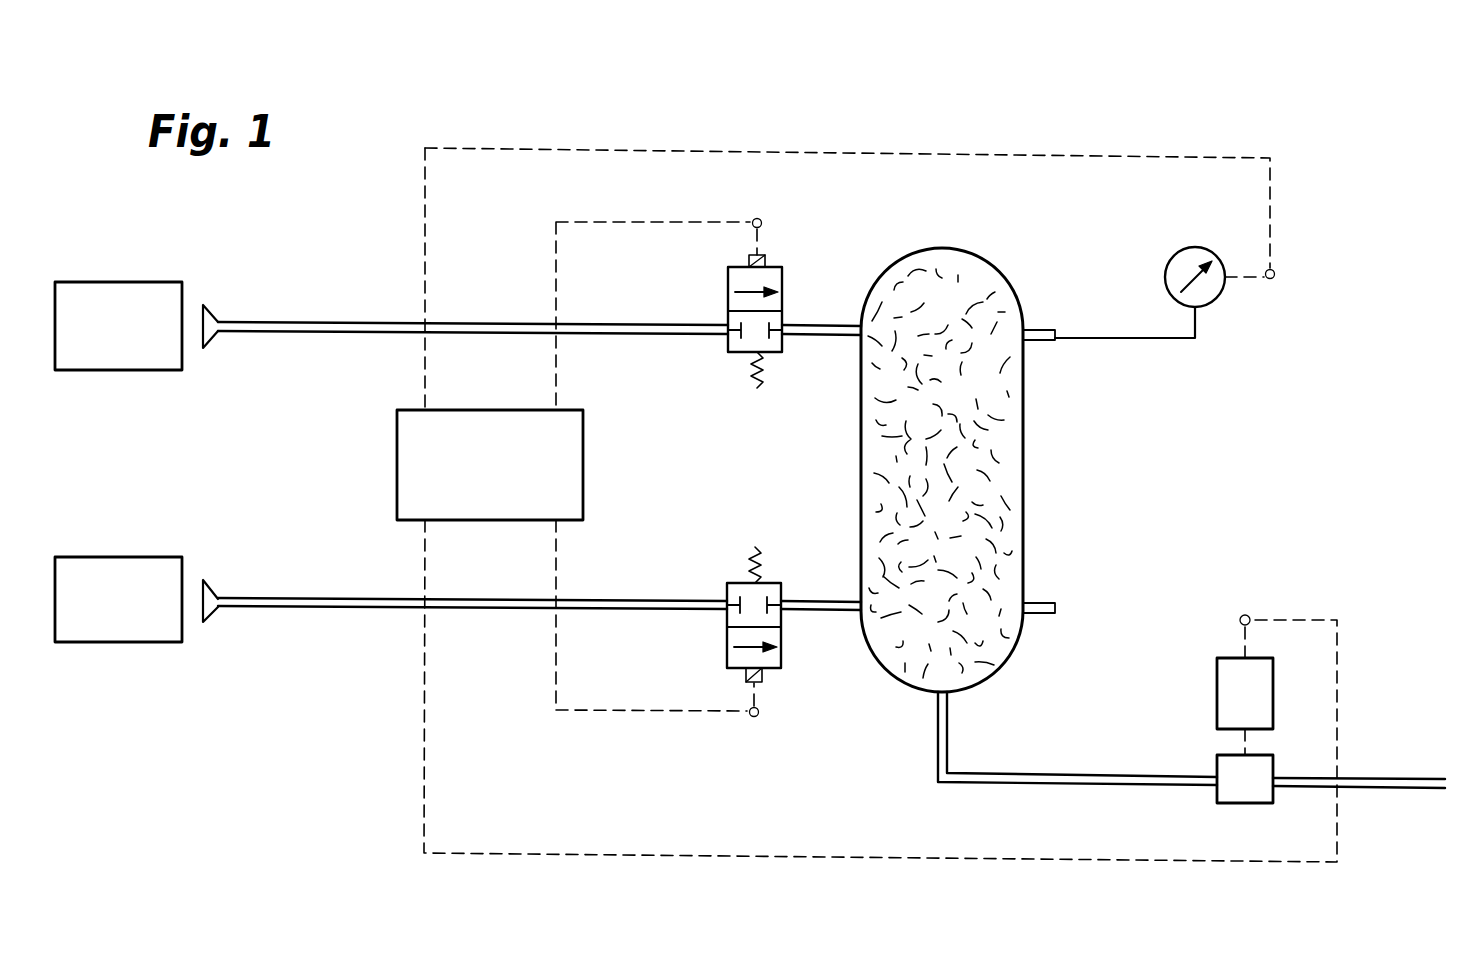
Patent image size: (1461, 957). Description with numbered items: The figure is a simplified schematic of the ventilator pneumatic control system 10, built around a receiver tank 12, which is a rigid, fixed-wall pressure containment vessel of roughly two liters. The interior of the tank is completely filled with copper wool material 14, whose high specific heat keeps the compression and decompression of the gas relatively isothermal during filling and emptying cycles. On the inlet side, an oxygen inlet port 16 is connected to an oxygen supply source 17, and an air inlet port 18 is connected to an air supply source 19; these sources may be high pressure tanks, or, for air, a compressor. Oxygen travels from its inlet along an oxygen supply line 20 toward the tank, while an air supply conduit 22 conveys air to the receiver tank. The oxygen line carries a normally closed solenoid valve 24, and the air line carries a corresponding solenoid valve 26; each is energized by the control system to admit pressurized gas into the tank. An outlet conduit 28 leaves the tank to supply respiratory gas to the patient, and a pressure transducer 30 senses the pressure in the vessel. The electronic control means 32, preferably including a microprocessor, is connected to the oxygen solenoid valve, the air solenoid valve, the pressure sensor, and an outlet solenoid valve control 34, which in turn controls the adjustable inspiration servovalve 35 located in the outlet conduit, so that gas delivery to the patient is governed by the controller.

The ventilator pneumatic control system 10 is at (1355, 377).
The receiver tank 12 is at (1004, 278).
The copper wool material 14 is at (1014, 421).
The oxygen inlet port 16 is at (206, 312).
The oxygen supply source 17 is at (128, 283).
The air inlet port 18 is at (206, 588).
The air supply source 19 is at (107, 557).
The oxygen supply line 20 is at (336, 322).
The air supply conduit 22 is at (338, 598).
The solenoid valve 24 is at (782, 272).
The air solenoid valve 26 is at (782, 660).
The outlet conduit 28 is at (1035, 783).
The pressure transducer 30 is at (1218, 297).
The electronic control means 32 is at (583, 440).
The outlet solenoid valve control 34 is at (1217, 697).
The adjustable inspiration servovalve 35 is at (1217, 760).